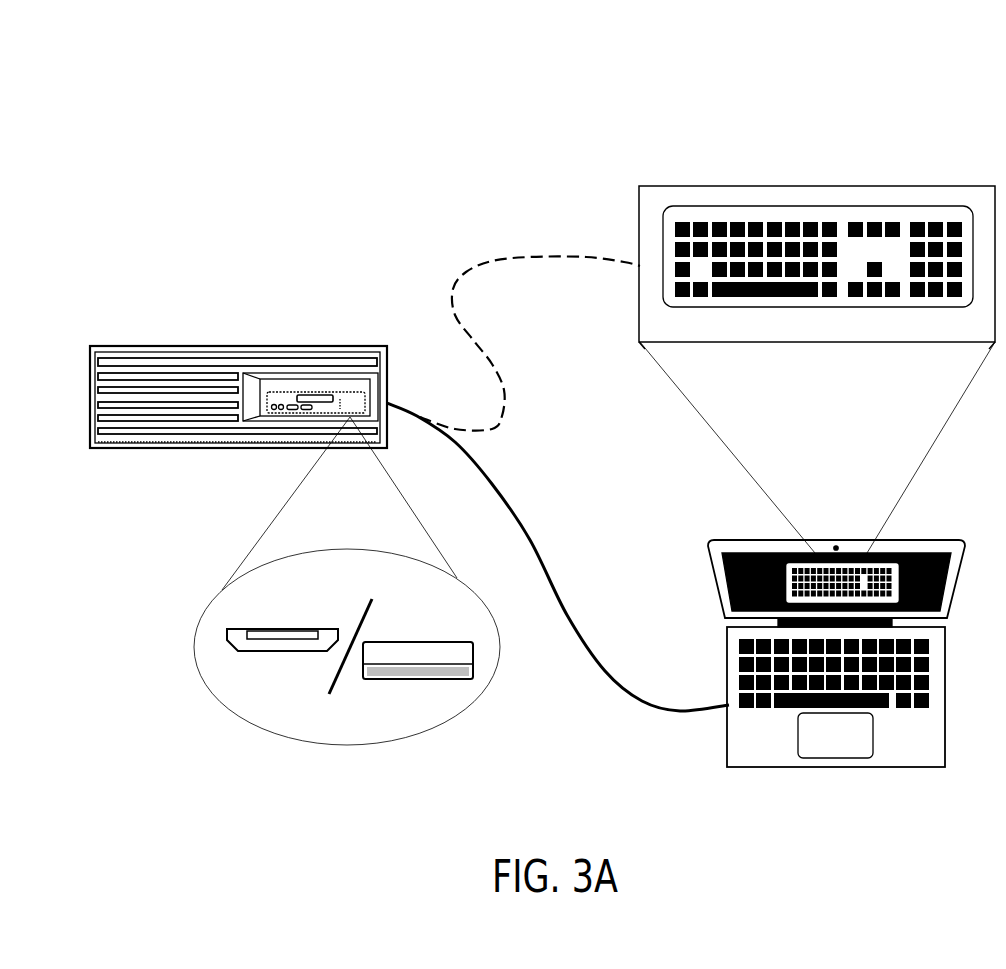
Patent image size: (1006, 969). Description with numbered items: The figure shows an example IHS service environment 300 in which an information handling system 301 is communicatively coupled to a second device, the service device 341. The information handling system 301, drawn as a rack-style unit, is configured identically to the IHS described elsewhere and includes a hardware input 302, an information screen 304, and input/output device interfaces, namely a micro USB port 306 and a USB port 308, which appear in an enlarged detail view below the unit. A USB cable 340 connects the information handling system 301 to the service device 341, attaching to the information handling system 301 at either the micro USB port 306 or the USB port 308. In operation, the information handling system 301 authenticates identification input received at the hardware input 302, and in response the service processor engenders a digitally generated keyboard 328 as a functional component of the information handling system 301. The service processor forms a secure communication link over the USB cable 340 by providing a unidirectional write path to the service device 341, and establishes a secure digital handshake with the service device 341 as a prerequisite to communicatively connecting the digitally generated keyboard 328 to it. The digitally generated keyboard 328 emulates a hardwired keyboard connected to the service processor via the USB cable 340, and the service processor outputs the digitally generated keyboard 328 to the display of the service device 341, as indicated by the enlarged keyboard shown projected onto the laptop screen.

The IHS service environment 300 is at (180, 115).
The information handling system 301 is at (215, 347).
The hardware input 302 is at (280, 405).
The information screen 304 is at (343, 395).
The micro USB port 306 is at (240, 629).
The USB port 308 is at (393, 642).
The digitally generated keyboard 328 is at (828, 186).
The USB cable 340 is at (567, 619).
The service device 341 is at (925, 767).